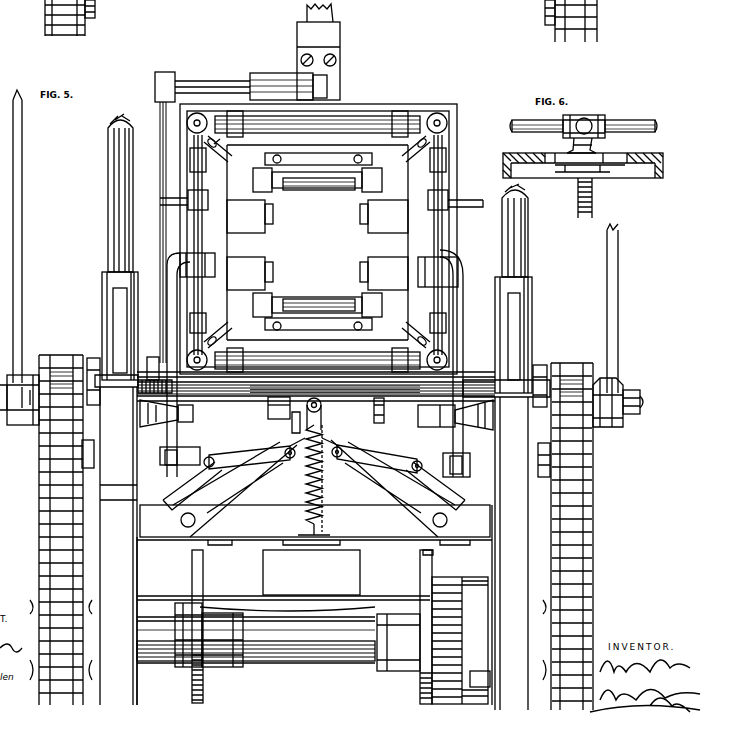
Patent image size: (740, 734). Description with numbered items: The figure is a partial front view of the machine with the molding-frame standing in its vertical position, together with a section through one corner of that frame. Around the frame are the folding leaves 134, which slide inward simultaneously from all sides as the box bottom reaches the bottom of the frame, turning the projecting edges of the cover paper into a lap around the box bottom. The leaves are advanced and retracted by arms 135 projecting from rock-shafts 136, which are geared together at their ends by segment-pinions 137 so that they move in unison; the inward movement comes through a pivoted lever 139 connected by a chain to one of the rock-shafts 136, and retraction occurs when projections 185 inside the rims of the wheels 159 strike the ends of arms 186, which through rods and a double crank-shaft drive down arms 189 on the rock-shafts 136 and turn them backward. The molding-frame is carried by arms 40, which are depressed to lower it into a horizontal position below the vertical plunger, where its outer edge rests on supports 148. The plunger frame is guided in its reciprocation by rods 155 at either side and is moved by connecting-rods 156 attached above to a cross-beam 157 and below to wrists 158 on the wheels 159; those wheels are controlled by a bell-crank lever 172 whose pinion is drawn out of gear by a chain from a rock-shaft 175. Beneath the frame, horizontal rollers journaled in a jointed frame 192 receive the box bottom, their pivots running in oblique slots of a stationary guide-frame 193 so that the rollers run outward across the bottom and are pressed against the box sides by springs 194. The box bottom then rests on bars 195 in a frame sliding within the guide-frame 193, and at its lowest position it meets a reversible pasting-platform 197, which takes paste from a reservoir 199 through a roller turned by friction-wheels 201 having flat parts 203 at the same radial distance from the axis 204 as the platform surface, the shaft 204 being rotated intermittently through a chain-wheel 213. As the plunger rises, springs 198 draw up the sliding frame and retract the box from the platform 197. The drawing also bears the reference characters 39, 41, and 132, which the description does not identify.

In FIG. 5, the bracket 39 is at (315, 458).
In FIG. 5, the arms 40 is at (312, 363).
In FIG. 5, the shaft 41 is at (316, 386).
In FIG. 5, the vertical rod 132 is at (168, 72).
In FIG. 5, the folding leaves 134 is at (317, 245).
In FIG. 5, the arms 135 is at (190, 157).
In FIG. 5, the rock-shafts 136 is at (190, 245).
In FIG. 6, the rock-shafts 136 is at (540, 120).
In FIG. 5, the segment-pinions 137 is at (317, 242).
In FIG. 5, the lever 139 is at (342, 414).
In FIG. 5, the supports 148 is at (316, 415).
In FIG. 5, the rods 155 is at (112, 240).
In FIG. 6, the rods 155 is at (503, 240).
In FIG. 5, the connecting-rods 156 is at (13, 255).
In FIG. 5, the cross-beam 157 is at (618, 409).
In FIG. 6, the cross-beam 157 is at (583, 166).
In FIG. 5, the wrists 158 is at (19, 400).
In FIG. 5, the wheels 159 is at (44, 452).
In FIG. 5, the bell-crank lever 172 is at (356, 455).
In FIG. 5, the rock-shaft 175 is at (316, 451).
In FIG. 5, the projections 185 is at (96, 6).
In FIG. 6, the projections 185 is at (563, 21).
In FIG. 5, the arms 186 is at (317, 388).
In FIG. 5, the arms 189 is at (470, 200).
In FIG. 5, the jointed frame 192 is at (352, 458).
In FIG. 5, the stationary guide-frame 193 is at (228, 492).
In FIG. 5, the springs 194 is at (175, 494).
In FIG. 5, the bars 195 is at (393, 488).
In FIG. 5, the reversible pasting-platform 197 is at (311, 572).
In FIG. 5, the springs 198 is at (300, 494).
In FIG. 5, the reservoir 199 is at (320, 480).
In FIG. 5, the friction-wheels 201 is at (303, 627).
In FIG. 5, the flat parts 203 is at (431, 547).
In FIG. 5, the shaft 204 is at (283, 629).
In FIG. 5, the chain-wheel 213 is at (460, 634).